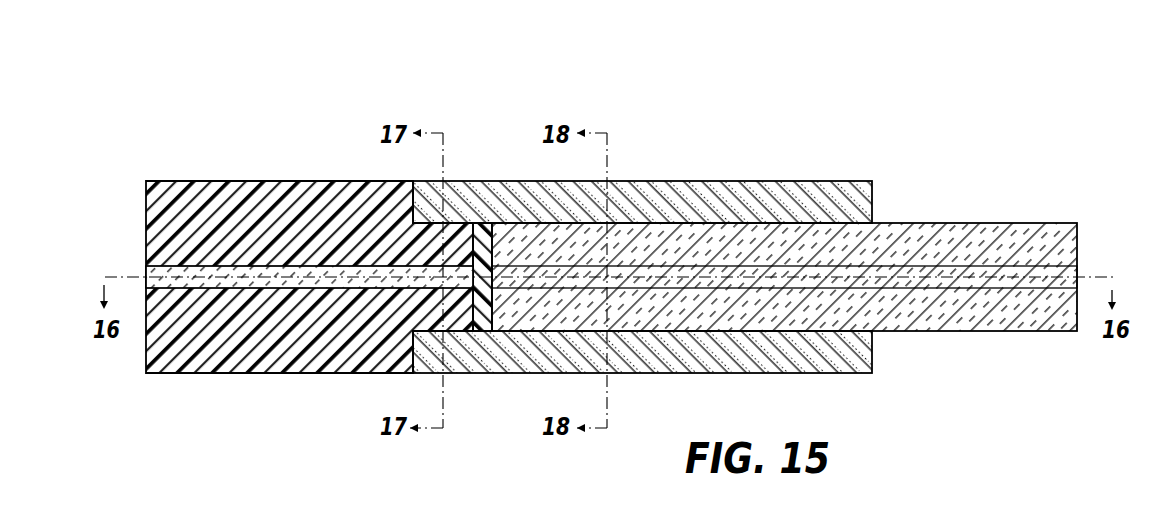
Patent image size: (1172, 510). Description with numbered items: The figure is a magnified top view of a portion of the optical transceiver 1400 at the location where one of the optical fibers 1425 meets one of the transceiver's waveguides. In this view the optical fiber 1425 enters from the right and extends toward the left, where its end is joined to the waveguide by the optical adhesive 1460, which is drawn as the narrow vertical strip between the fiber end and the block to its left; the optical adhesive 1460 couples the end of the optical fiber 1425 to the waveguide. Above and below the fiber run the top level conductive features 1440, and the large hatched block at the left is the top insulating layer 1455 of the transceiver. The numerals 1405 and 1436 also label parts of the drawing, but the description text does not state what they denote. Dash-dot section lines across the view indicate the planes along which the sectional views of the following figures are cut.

The optical transceiver 1400 is at (190, 98).
The electrode 1405 is at (578, 277).
The optical fiber 1425 is at (908, 240).
The current collector 1436 is at (318, 268).
The top level conductive features 1440 is at (728, 192).
The top insulating layer 1455 is at (218, 200).
The optical adhesive 1460 is at (485, 225).